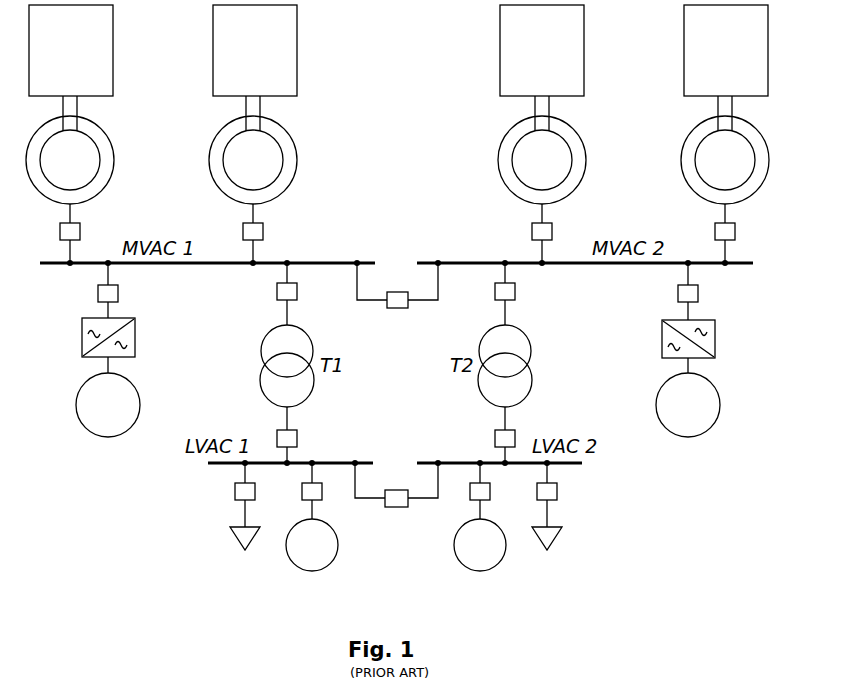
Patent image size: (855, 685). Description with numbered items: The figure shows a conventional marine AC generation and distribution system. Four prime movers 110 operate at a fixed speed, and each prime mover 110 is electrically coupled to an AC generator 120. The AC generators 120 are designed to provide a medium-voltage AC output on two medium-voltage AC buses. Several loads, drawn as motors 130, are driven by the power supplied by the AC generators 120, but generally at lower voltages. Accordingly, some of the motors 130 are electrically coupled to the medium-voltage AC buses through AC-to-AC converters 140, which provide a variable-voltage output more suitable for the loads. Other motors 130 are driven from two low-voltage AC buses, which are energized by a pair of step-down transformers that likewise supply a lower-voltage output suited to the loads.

The prime mover 110 is at (113, 63).
The AC generator 120 is at (113, 177).
The motor 130 is at (80, 427).
The AC-to-AC converter 140 is at (135, 335).